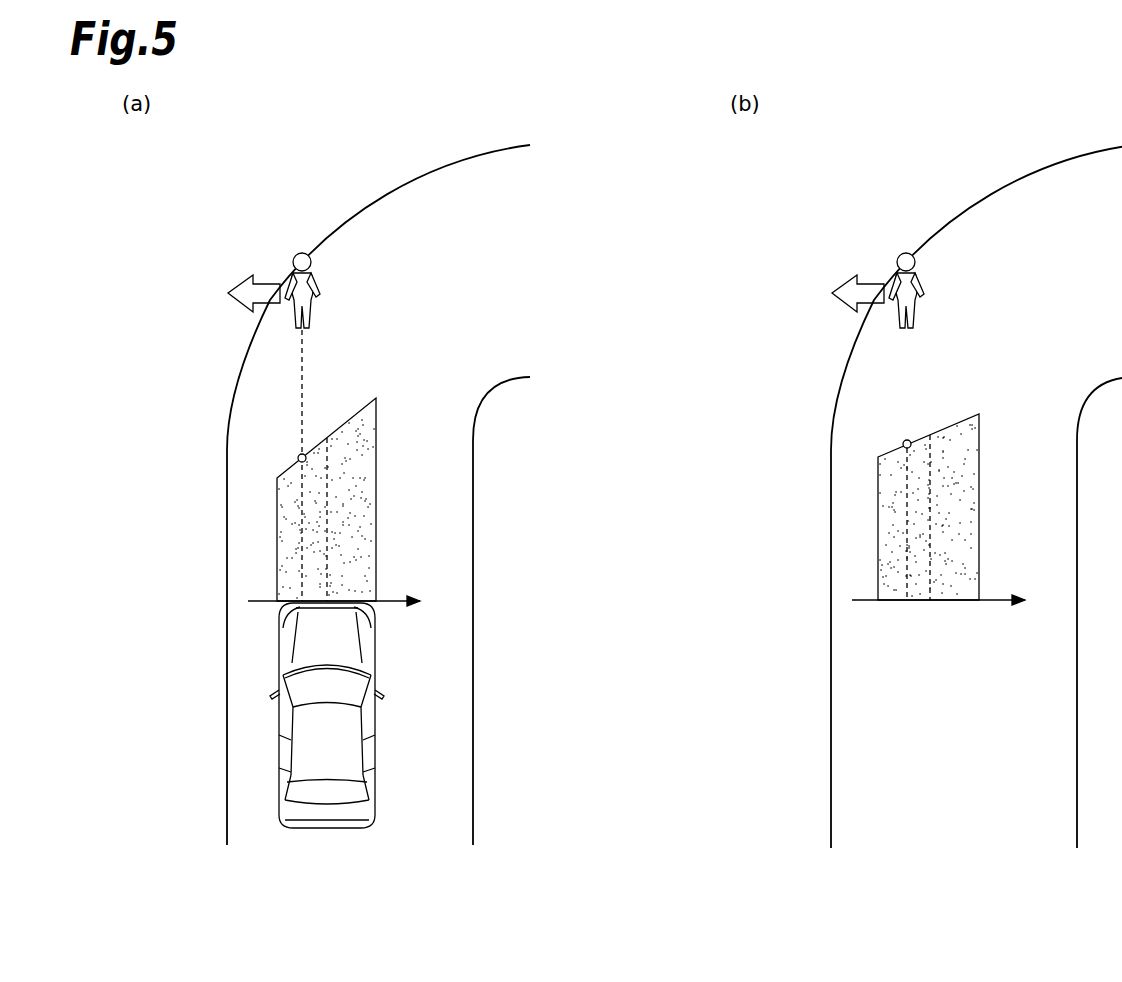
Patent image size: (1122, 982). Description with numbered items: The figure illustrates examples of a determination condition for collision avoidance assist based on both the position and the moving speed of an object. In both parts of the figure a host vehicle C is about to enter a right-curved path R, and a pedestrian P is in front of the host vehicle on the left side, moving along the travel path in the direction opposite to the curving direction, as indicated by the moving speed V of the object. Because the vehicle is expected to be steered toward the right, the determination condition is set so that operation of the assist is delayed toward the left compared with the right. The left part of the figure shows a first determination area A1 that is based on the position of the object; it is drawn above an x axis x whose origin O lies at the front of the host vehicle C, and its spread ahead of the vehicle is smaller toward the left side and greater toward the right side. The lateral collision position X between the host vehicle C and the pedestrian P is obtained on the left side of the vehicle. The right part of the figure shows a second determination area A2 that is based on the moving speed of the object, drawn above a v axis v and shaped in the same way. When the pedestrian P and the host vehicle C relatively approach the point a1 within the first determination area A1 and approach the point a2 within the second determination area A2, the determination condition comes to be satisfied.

The right-curved path R is at (237, 380).
The pedestrian P is at (314, 278).
The moving speed of the object V is at (569, 443).
The first determination area A1 is at (380, 436).
The point a1 is at (298, 455).
The x axis (lateral position) x is at (344, 601).
The host vehicle C is at (373, 712).
The lateral collision position X is at (290, 618).
The origin O is at (325, 603).
The second determination area A2 is at (983, 438).
The point a2 is at (903, 442).
The v axis (lateral velocity) v is at (948, 600).